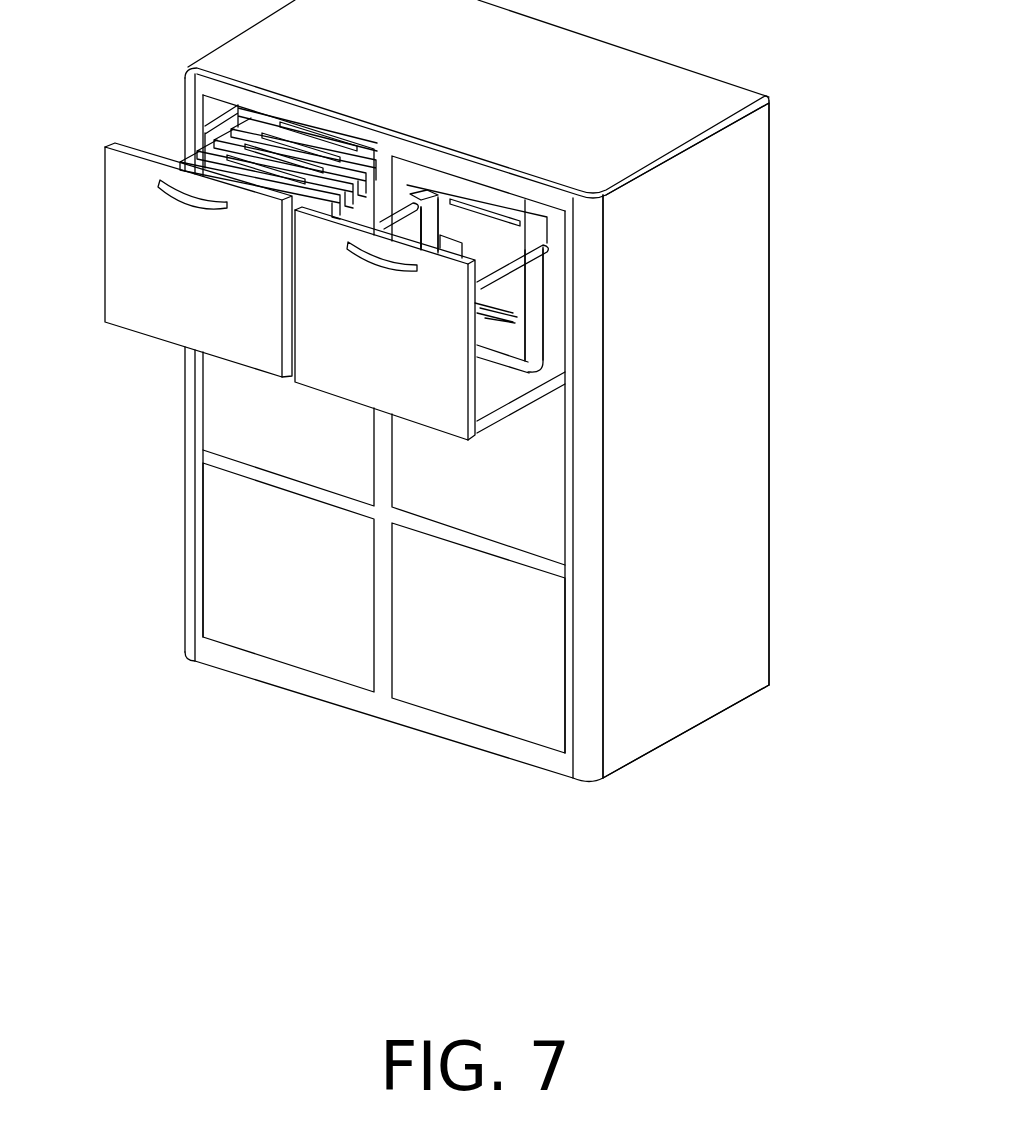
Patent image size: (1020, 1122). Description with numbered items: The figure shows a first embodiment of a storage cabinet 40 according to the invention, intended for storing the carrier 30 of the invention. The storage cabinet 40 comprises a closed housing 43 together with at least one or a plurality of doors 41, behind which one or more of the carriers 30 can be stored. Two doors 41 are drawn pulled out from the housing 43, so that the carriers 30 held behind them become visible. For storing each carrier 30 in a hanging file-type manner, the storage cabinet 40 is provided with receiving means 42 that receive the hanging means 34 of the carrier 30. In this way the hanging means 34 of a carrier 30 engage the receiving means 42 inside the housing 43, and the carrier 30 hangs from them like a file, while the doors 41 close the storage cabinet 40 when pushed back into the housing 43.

The storage cabinet 40 is at (812, 145).
The door 41 is at (128, 260).
The receiving means 42 is at (385, 222).
The hanging means 34 is at (410, 193).
The carrier 30 is at (537, 295).
The closed housing 43 is at (722, 420).